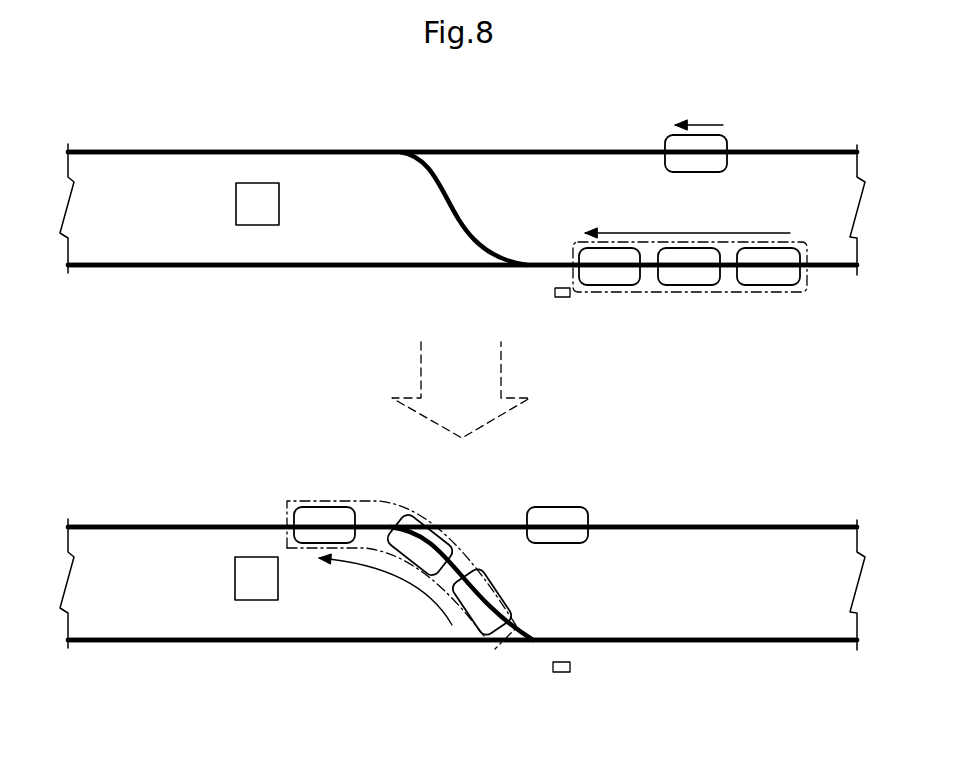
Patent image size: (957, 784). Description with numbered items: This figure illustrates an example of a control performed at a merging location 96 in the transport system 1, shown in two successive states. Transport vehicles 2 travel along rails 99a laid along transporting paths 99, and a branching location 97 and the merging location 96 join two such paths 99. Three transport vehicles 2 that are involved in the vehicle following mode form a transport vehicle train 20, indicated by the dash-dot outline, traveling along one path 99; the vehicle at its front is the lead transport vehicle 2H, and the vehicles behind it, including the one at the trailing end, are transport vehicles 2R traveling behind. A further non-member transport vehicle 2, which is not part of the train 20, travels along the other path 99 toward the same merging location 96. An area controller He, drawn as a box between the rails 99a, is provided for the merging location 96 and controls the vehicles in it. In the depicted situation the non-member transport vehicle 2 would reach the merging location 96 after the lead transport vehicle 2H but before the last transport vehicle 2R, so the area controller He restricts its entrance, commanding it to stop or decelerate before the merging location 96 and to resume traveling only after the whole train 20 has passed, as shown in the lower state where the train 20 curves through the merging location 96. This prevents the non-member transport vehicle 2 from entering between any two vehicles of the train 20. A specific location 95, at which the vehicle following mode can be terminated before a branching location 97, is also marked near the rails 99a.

The transport system 1 is at (752, 102).
The transport vehicle 2 is at (728, 143).
The lead transport vehicle 2H is at (610, 285).
The transport vehicle traveling behind 2R is at (690, 285).
The transport vehicle train 20 is at (720, 292).
The specific location 95 is at (555, 292).
The merging location 96 is at (373, 168).
The branching location 97 is at (539, 244).
The rail 99a is at (193, 151).
The transporting path 99 is at (462, 396).
The area controller He is at (236, 203).